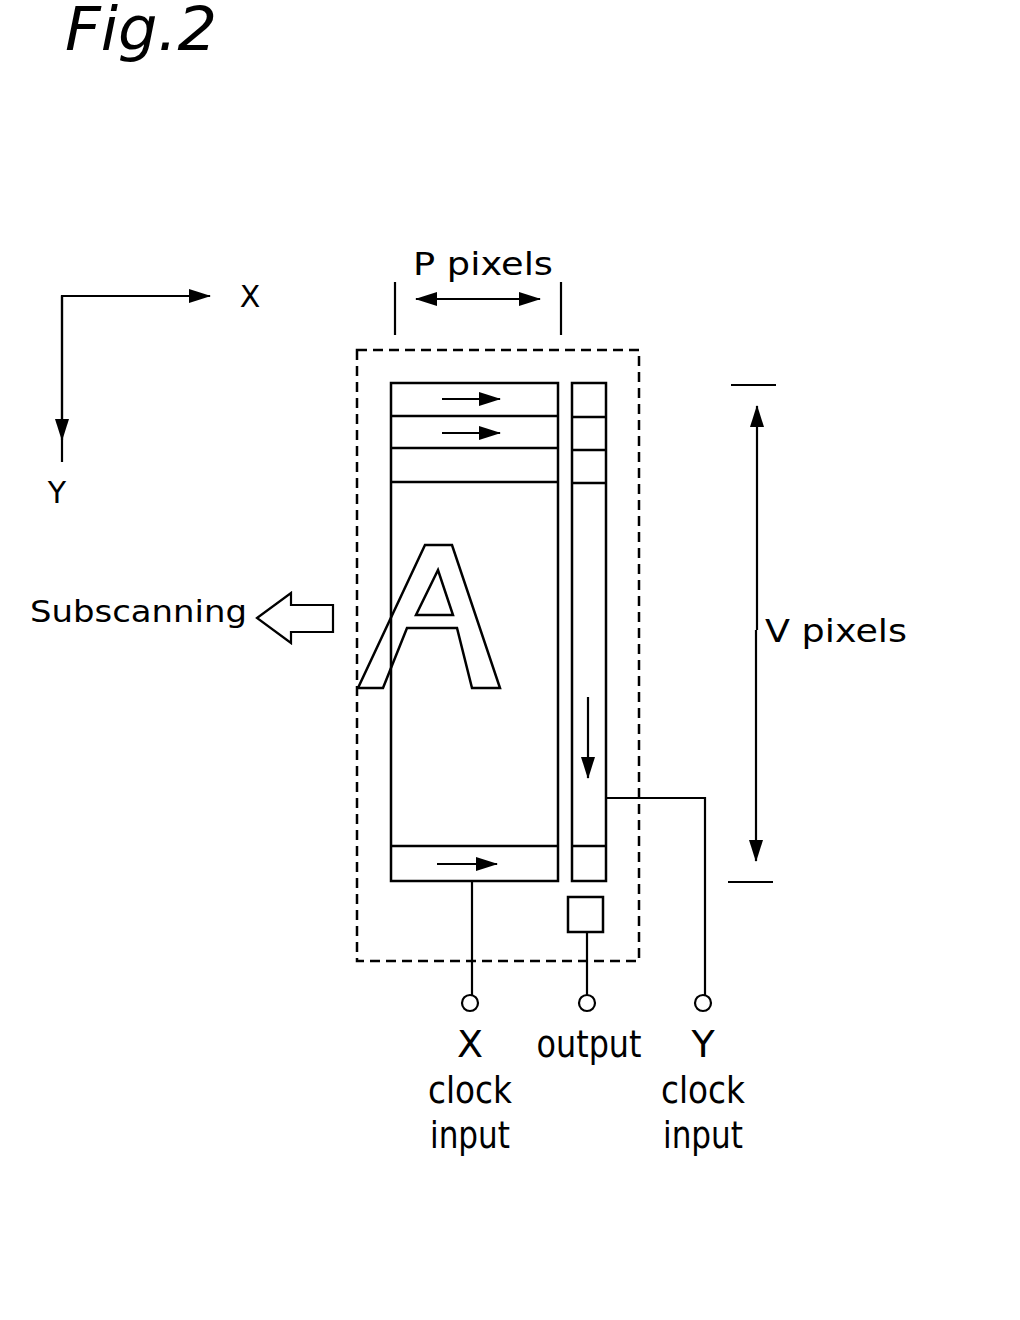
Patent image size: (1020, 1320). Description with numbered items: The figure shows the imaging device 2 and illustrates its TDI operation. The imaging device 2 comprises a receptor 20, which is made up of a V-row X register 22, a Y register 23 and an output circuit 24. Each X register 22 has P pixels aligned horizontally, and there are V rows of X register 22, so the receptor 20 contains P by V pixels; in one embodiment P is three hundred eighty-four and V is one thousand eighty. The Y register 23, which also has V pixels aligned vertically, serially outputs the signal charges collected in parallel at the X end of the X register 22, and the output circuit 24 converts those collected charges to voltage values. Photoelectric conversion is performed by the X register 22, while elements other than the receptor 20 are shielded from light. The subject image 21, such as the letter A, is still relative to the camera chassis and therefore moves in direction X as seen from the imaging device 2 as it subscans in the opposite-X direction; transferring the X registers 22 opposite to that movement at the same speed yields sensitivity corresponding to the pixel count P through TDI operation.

The imaging device 2 is at (607, 350).
The receptor 20 is at (391, 515).
The subject image 21 is at (367, 672).
The X register 22 is at (395, 432).
The Y register 23 is at (590, 565).
The output circuit 24 is at (568, 915).